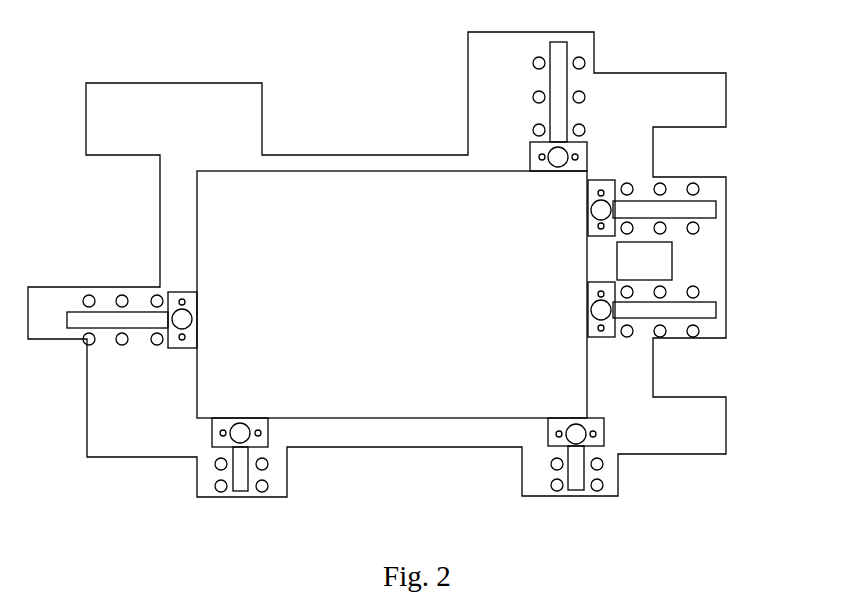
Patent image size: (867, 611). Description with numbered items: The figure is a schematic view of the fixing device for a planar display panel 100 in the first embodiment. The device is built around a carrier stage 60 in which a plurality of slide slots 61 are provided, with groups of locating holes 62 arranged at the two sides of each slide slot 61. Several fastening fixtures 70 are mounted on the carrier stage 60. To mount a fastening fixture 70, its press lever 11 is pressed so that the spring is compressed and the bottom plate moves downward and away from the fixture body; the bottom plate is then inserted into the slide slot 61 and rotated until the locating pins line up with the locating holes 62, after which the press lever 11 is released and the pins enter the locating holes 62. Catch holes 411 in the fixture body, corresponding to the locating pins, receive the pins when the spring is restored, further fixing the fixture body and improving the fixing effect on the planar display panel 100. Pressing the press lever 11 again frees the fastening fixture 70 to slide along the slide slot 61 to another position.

The carrier stage 60 is at (222, 100).
The planar display panel 100 is at (362, 195).
The fastening fixture 70 is at (530, 157).
The slide slot 61 is at (698, 210).
The locating holes 62 is at (697, 290).
The press lever 11 is at (638, 415).
The catch holes 411 is at (596, 432).